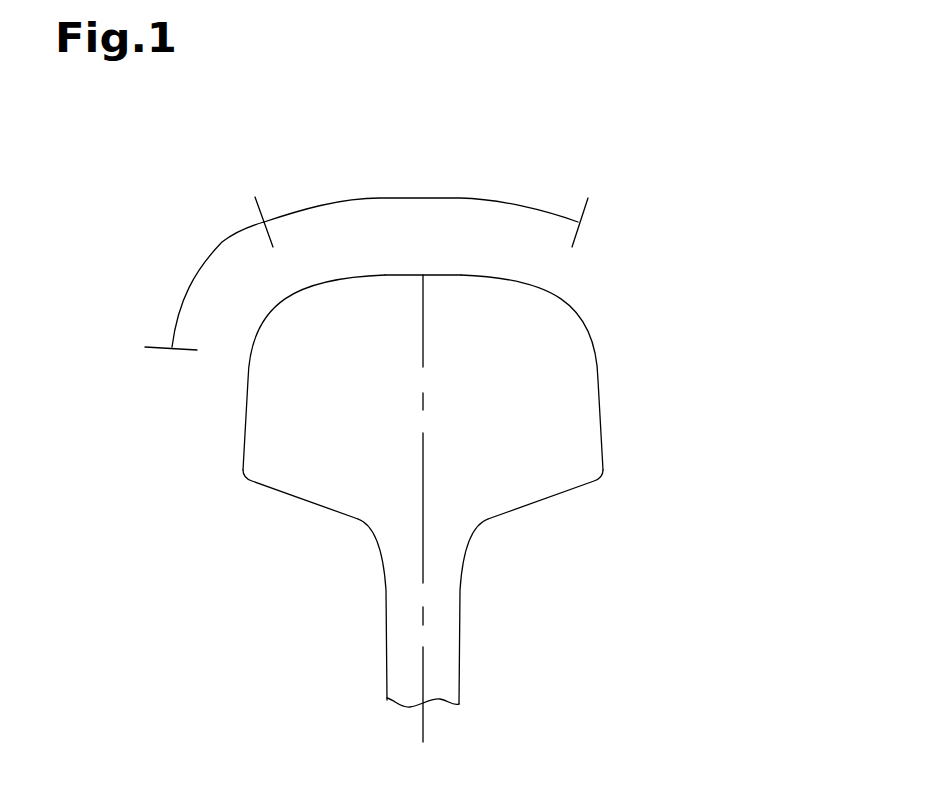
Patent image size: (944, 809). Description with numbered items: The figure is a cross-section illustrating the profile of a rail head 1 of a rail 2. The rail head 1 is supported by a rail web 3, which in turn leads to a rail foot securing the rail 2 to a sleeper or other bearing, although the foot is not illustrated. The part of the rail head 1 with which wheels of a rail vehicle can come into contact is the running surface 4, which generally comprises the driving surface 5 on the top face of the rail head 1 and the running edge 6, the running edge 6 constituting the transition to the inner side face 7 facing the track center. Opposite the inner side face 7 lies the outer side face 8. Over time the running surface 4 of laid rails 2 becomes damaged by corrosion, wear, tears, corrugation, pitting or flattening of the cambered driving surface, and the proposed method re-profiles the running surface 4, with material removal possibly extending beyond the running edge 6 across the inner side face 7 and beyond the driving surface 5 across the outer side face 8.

The rail head 1 is at (432, 317).
The rail 2 is at (640, 593).
The rail web 3 is at (403, 642).
The running surface 4 is at (373, 275).
The driving surface 5 is at (480, 198).
The running edge 6 is at (208, 260).
The inner side face 7 is at (243, 417).
The outer side face 8 is at (597, 368).